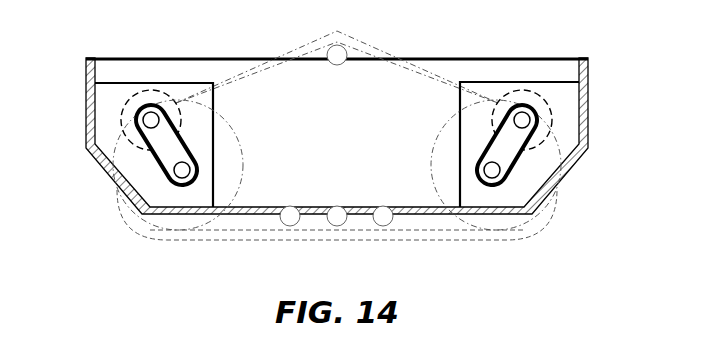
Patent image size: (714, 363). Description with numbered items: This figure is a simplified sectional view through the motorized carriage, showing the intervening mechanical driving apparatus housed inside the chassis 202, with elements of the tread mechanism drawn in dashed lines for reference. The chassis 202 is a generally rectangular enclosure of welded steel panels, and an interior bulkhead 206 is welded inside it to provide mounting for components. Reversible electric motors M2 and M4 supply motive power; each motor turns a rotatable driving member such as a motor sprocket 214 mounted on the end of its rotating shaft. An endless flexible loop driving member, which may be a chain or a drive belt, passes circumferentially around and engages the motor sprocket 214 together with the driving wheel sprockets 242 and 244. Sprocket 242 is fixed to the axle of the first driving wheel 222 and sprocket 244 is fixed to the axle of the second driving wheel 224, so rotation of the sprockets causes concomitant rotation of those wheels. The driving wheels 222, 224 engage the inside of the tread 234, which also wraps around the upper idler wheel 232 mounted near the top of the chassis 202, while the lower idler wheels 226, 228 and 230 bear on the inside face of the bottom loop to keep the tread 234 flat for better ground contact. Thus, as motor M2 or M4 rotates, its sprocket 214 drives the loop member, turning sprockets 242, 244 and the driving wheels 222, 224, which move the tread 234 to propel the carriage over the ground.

The chassis 202 is at (91, 146).
The second interior bulkhead 206 is at (505, 82).
The sprocket 214 is at (490, 121).
The first driving wheel 222 is at (215, 122).
The second driving wheel 224 is at (442, 158).
The lower idler wheel 226 is at (285, 228).
The lower idler wheel 228 is at (332, 228).
The lower idler wheel 230 is at (377, 228).
The upper idler wheel 232 is at (327, 52).
The tread 234 is at (136, 205).
The sprocket 242 is at (200, 166).
The sprocket 244 is at (478, 167).
The motor M2 is at (548, 110).
The motor M4 is at (128, 110).